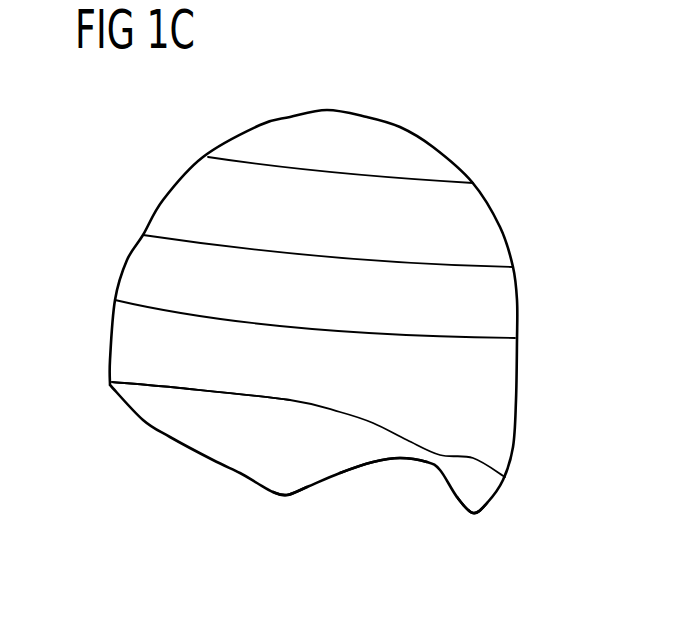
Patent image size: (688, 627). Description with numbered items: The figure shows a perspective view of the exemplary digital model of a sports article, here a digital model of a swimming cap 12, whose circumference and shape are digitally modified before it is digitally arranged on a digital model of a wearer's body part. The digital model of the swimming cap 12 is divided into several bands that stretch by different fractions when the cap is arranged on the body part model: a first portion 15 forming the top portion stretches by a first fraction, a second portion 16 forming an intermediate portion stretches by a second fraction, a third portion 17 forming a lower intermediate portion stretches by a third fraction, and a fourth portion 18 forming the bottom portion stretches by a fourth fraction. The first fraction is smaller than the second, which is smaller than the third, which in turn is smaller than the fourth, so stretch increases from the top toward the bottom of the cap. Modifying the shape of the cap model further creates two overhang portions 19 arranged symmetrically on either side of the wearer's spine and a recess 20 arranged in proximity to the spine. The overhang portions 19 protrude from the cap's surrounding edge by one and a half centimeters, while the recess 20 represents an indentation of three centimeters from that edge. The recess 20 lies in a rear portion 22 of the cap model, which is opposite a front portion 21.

The digital model of the swimming cap 12 is at (130, 164).
The first portion 15 is at (408, 160).
The second portion 16 is at (435, 222).
The third portion 17 is at (448, 302).
The fourth portion 18 is at (443, 395).
The overhang portions 19 is at (285, 493).
The recess 20 is at (368, 478).
The front portion 21 is at (228, 374).
The rear portion 22 is at (407, 529).